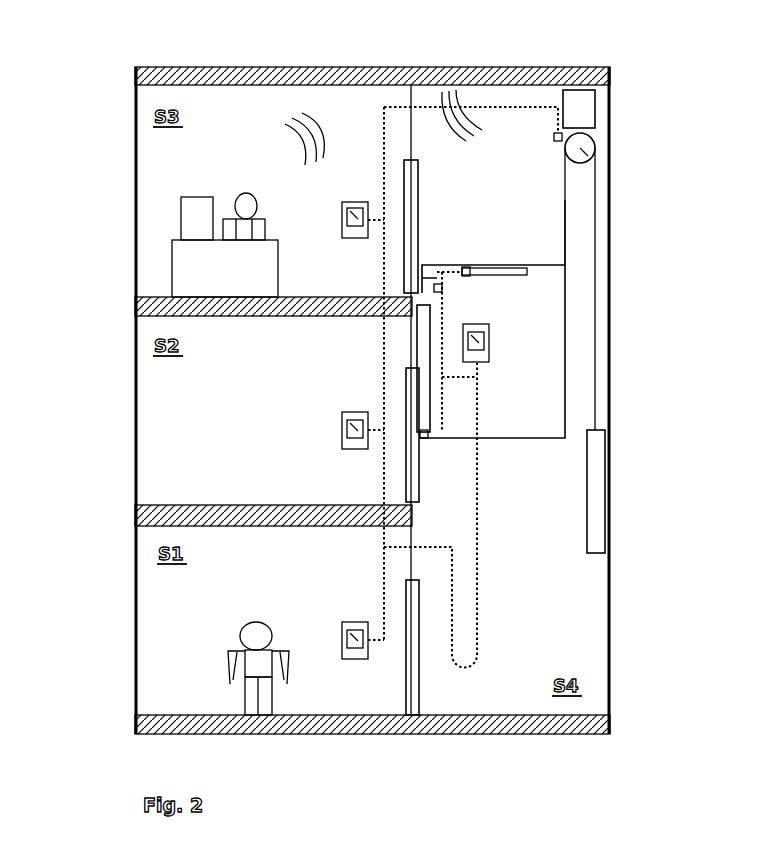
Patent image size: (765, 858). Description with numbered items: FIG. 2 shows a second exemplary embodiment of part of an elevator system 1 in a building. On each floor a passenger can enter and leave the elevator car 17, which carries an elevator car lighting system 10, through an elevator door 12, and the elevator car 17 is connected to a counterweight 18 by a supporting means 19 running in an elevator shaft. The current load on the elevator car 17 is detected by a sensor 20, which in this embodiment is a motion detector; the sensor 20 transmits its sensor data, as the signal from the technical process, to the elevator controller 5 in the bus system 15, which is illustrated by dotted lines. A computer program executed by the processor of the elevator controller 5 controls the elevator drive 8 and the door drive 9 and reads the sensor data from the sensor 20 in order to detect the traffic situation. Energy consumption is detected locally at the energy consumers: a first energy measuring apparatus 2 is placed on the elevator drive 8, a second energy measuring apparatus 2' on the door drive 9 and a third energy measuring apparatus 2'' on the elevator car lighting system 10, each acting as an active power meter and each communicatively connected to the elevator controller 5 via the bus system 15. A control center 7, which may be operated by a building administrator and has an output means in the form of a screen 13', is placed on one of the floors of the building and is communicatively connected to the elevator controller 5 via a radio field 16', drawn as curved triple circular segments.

The elevator system 1 is at (245, 98).
The radio field 16' is at (400, 84).
The control center 7 is at (163, 213).
The screen 13' is at (208, 186).
The energy measuring apparatus 2 is at (512, 148).
The energy measuring apparatus 2'' is at (511, 289).
The energy measuring apparatus 2' is at (488, 310).
The door drive 9 is at (425, 277).
The supporting means 19 is at (565, 214).
The elevator controller 5 is at (585, 107).
The elevator drive 8 is at (578, 145).
The elevator car lighting system 10 is at (527, 272).
The bus system 15 is at (417, 365).
The elevator door 12 is at (427, 397).
The elevator car 17 is at (562, 429).
The sensor 20 is at (428, 438).
The counterweight 18 is at (587, 542).